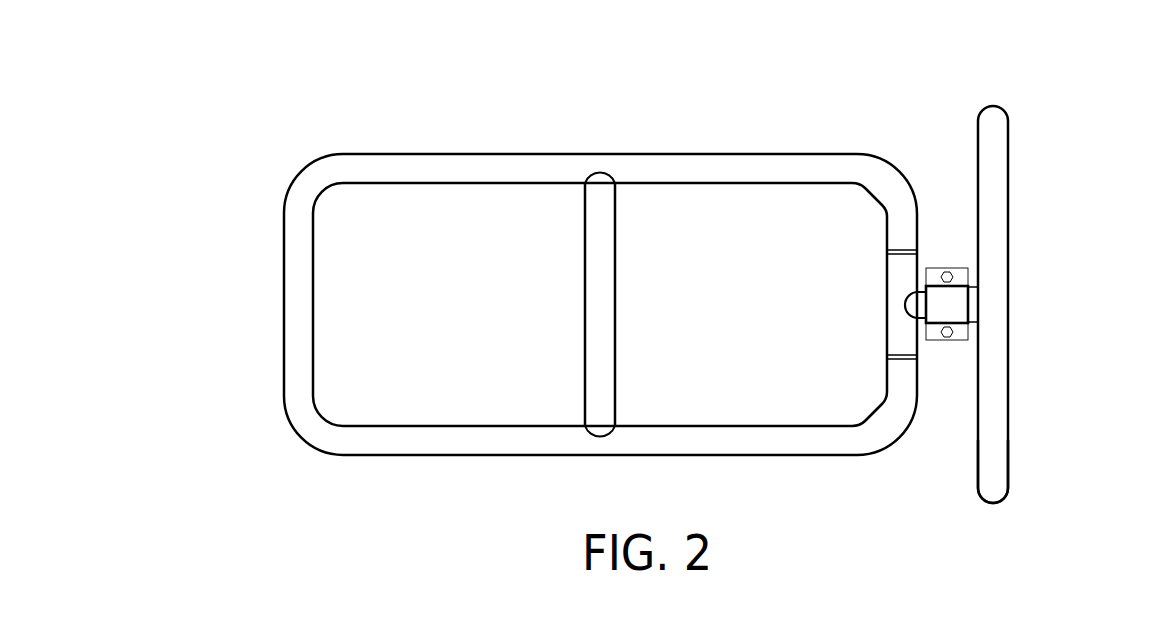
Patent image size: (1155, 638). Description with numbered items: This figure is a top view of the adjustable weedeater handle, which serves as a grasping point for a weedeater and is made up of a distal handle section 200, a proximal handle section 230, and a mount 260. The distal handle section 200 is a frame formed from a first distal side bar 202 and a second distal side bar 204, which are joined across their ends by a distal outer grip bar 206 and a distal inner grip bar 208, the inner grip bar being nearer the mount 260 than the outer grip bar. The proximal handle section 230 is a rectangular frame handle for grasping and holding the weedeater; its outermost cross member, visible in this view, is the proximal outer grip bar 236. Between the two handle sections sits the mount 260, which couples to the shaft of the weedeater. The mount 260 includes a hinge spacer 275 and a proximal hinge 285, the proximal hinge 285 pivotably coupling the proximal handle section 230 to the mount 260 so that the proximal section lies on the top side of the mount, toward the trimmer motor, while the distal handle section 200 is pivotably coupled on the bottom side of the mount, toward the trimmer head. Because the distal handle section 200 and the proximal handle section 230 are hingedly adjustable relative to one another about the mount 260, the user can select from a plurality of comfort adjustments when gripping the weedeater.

The distal handle section 200 is at (914, 88).
The first distal side bar 202 is at (430, 167).
The second distal side bar 204 is at (422, 443).
The distal outer grip bar 206 is at (298, 329).
The distal inner grip bar 208 is at (600, 292).
The proximal hinge 285 is at (892, 303).
The hinge spacer 275 is at (955, 302).
The proximal handle section 230 is at (1028, 97).
The proximal outer grip bar 236 is at (997, 462).
The mount 260 is at (977, 530).